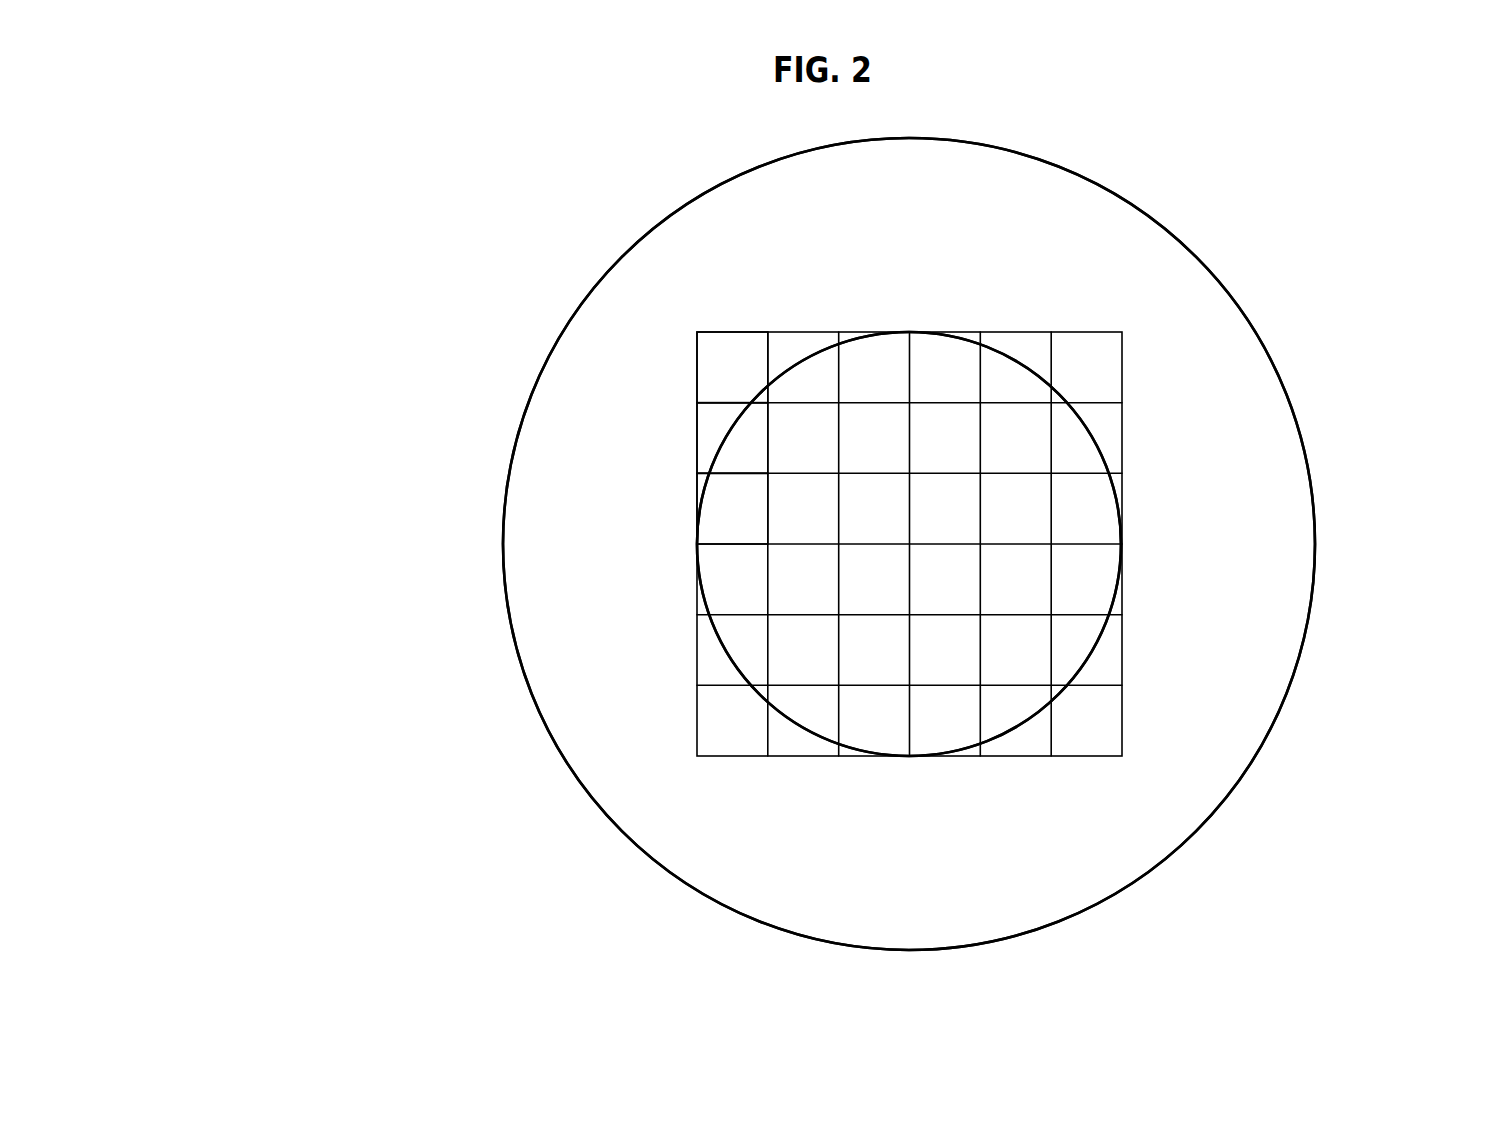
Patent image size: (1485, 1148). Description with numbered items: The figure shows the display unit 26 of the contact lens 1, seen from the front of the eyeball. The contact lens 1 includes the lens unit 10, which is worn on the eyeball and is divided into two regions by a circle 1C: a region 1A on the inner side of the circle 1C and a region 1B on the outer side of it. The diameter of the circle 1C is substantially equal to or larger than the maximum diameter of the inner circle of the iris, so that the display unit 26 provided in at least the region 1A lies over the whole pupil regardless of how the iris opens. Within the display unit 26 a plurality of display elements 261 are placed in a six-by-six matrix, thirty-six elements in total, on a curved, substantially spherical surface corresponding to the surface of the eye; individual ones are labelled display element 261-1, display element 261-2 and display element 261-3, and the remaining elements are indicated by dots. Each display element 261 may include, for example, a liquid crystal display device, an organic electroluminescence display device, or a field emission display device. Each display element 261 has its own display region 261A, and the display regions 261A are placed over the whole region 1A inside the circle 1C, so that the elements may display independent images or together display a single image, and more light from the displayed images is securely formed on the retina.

The contact lens 1 is at (785, 516).
The lens unit 10 is at (1210, 270).
The region 1A is at (1010, 378).
The region 1B is at (1228, 408).
The circle 1C is at (1110, 485).
The display unit 26 is at (611, 519).
The display elements 261 is at (434, 488).
The display region 261A is at (732, 345).
The display element 261-1 is at (722, 372).
The display element 261-2 is at (713, 438).
The display element 261-3 is at (722, 513).